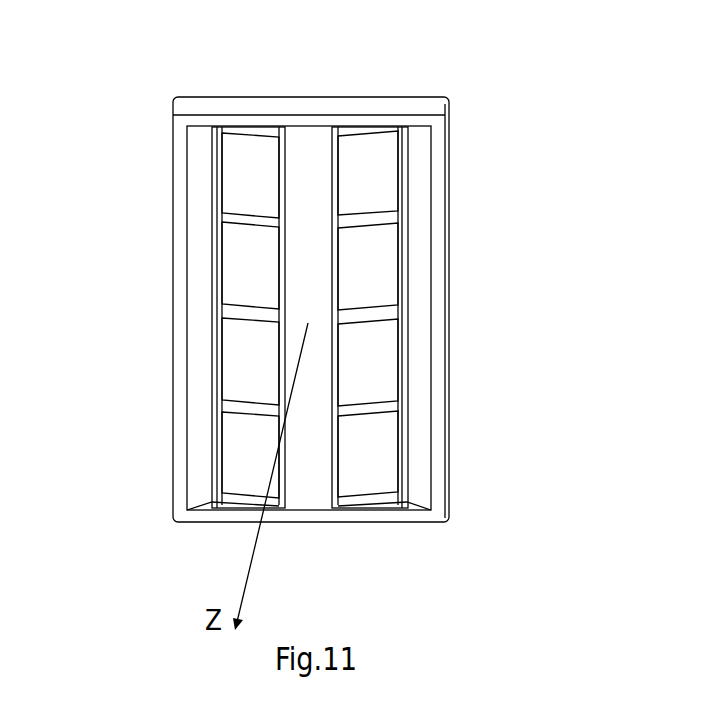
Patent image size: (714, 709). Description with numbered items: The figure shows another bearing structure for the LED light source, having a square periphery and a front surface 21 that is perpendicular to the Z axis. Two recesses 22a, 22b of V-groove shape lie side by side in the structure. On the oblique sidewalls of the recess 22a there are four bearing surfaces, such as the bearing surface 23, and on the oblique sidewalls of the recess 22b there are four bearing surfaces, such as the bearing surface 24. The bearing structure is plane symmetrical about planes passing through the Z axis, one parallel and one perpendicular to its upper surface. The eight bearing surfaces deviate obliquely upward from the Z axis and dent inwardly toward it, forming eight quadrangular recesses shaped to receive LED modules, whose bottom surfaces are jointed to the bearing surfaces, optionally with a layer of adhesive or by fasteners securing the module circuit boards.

The front surface 21 is at (183, 173).
The recess 22a is at (157, 275).
The recess 22b is at (475, 285).
The bearing surface 23 is at (257, 158).
The bearing surface 24 is at (377, 170).